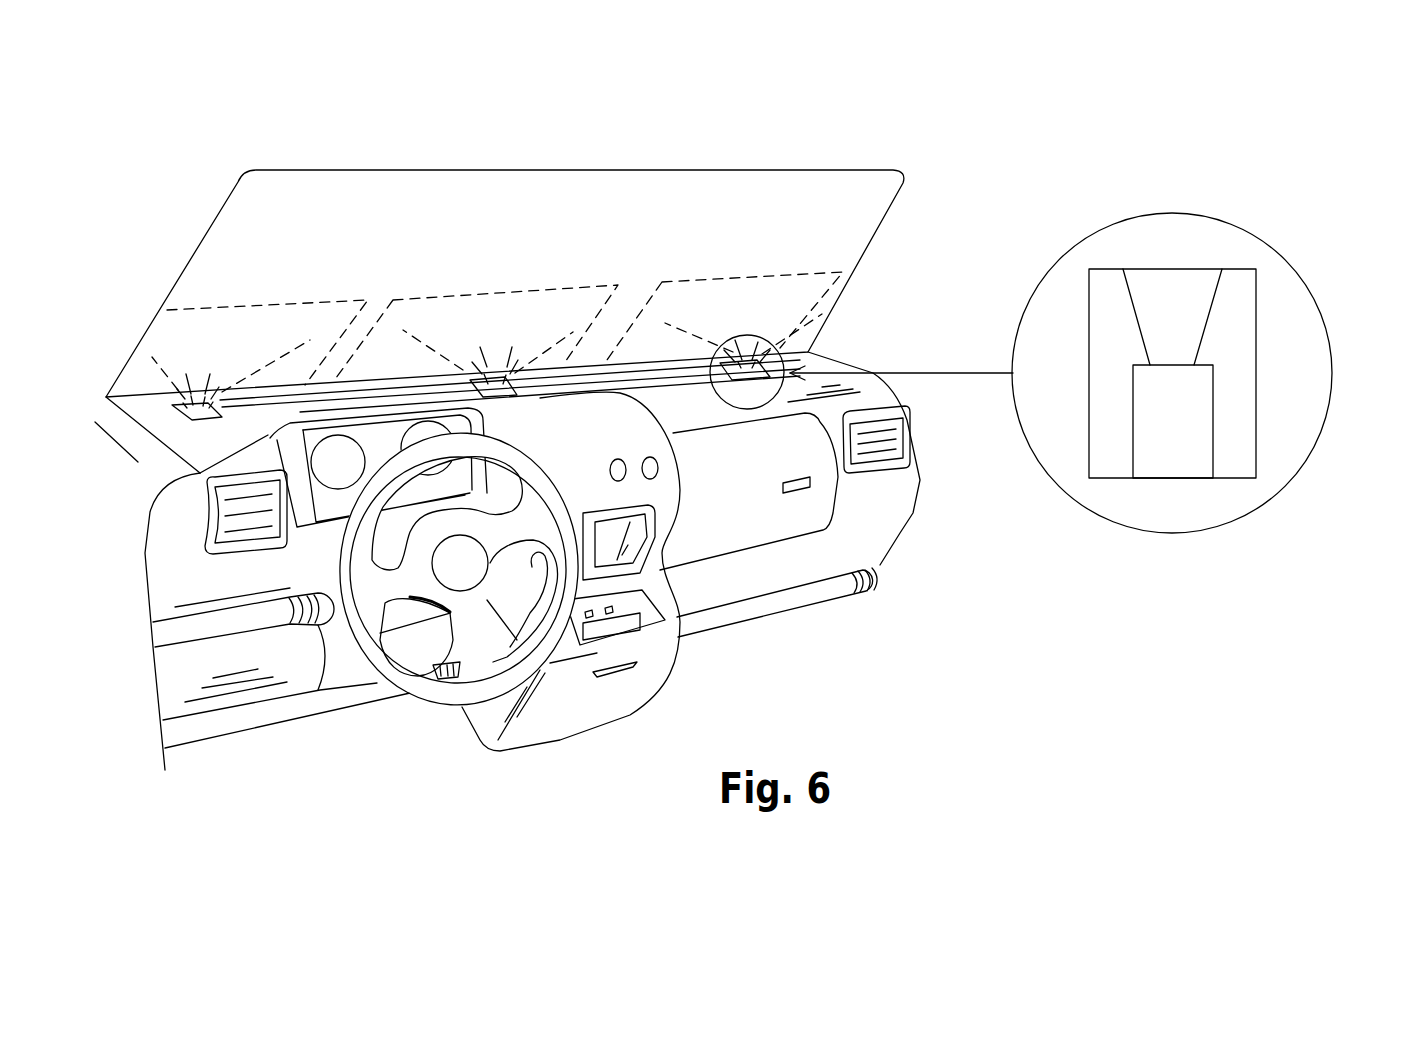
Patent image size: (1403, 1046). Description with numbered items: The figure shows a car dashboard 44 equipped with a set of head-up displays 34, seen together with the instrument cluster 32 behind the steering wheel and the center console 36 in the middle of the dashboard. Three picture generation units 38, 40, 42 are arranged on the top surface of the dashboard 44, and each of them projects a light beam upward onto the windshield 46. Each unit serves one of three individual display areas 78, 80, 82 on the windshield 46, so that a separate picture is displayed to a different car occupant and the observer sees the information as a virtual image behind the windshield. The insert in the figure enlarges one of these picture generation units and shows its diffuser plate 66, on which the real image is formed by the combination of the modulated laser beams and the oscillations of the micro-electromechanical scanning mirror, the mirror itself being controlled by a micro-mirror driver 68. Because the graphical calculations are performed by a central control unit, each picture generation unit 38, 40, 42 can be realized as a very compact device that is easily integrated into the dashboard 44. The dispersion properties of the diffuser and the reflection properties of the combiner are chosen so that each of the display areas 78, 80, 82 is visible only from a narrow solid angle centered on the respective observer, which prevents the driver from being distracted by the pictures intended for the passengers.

The instrument cluster 32 is at (383, 448).
The set of head-up displays 34 is at (908, 386).
The center console 36 is at (682, 540).
The picture generation unit 38 is at (198, 403).
The picture generation unit 40 is at (495, 378).
The picture generation unit 42 is at (1253, 393).
The dashboard 44 is at (922, 487).
The windshield 46 is at (884, 238).
The diffuser plate 66 is at (1172, 269).
The micro-mirror driver 68 is at (746, 352).
The display area 78 is at (308, 308).
The display area 80 is at (540, 305).
The display area 82 is at (788, 290).